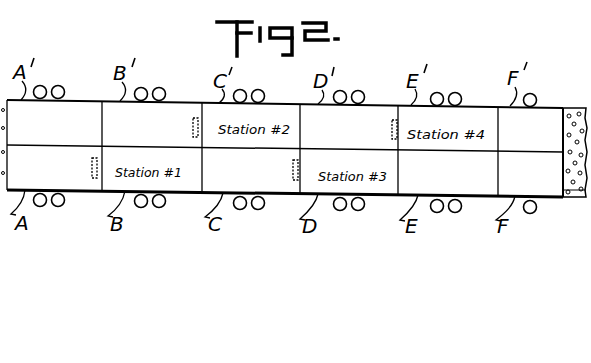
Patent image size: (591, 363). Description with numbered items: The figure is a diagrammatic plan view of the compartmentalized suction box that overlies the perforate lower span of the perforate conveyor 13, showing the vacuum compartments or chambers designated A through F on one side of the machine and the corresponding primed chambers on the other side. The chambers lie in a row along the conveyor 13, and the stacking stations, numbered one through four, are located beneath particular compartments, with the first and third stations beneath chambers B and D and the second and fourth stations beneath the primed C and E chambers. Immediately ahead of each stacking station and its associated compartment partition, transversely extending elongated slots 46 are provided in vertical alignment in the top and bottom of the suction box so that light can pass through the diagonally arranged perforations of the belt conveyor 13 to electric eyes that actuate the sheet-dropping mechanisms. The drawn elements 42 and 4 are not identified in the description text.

The transversely extending elongated slot 46 is at (222, 150).
The perforate conveyor 13 is at (569, 108).
The end wall 42 is at (573, 198).
The base 4 is at (586, 251).